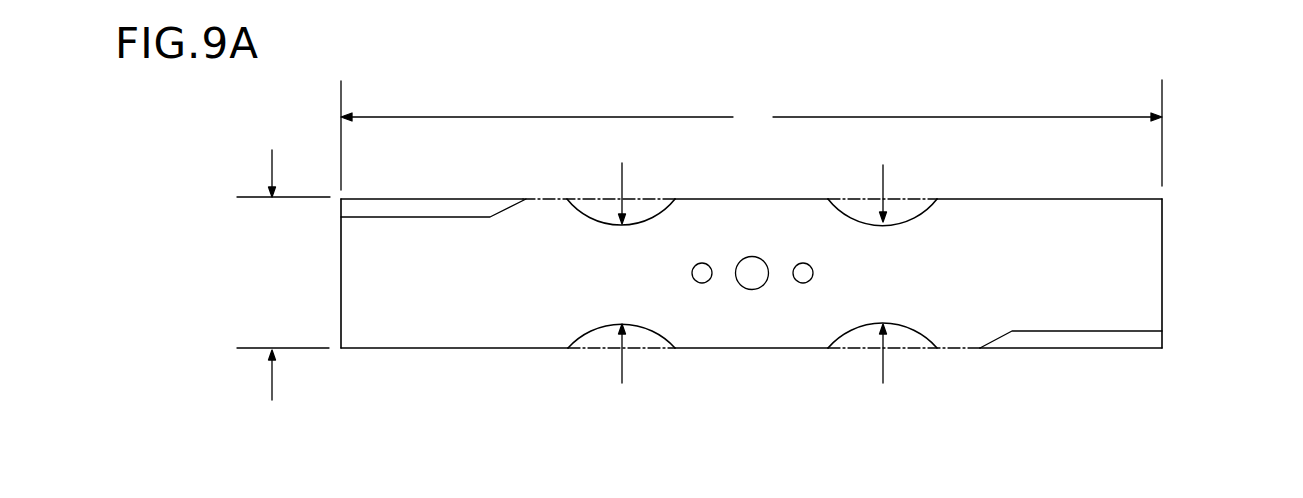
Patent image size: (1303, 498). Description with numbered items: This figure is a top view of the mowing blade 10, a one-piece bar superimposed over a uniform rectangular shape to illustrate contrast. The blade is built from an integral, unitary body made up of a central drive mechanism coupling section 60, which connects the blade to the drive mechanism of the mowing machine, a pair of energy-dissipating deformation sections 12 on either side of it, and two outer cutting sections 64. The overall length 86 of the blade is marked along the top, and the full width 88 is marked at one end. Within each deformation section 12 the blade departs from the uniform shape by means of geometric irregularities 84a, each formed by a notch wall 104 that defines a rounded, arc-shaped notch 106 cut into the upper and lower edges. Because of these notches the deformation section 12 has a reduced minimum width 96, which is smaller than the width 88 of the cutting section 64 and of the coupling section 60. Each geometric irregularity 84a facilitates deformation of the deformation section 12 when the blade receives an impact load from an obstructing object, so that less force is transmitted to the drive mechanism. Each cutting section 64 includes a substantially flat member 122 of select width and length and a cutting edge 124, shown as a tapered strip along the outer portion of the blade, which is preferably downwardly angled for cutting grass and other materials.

The mowing blade 10 is at (981, 60).
The energy-dissipating deformation section 12 is at (634, 280).
The drive mechanism coupling section 60 is at (767, 240).
The cutting section 64 is at (432, 286).
The geometric irregularity 84a is at (647, 212).
The length 86 is at (758, 110).
The width 88 is at (258, 133).
The minimum width 96 is at (633, 398).
The notch wall 104 is at (593, 219).
The notch 106 is at (768, 275).
The flat member 122 is at (357, 272).
The cutting edge 124 is at (398, 207).